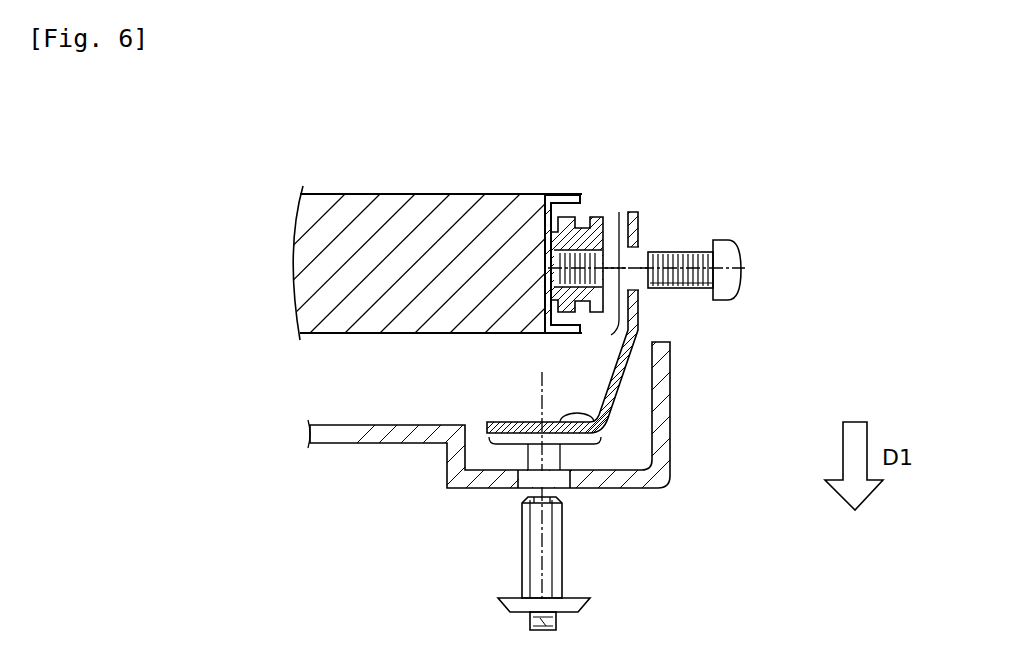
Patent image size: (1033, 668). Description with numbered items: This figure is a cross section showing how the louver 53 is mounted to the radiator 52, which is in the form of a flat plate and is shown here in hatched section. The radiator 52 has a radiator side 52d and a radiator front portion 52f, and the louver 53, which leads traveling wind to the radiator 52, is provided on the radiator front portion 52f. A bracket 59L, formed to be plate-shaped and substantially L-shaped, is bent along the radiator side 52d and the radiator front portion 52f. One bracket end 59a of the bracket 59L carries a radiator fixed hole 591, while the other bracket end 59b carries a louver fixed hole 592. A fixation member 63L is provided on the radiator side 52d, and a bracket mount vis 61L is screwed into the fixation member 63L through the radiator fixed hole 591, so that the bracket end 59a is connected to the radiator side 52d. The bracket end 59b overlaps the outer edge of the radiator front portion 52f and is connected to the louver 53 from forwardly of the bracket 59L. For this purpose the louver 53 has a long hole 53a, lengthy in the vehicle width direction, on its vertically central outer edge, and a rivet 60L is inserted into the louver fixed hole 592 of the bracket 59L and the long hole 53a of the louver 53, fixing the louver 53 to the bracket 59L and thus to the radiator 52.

The radiator 52 is at (484, 212).
The radiator side 52d is at (578, 195).
The radiator front portion 52f is at (325, 335).
The bracket end 59a is at (618, 243).
The radiator fixed hole 591 is at (642, 252).
The bracket mount vis 61L is at (742, 263).
The bracket 59L is at (641, 310).
The fixation member 63L is at (590, 313).
The louver 53 is at (672, 405).
The louver fixed hole 592 is at (612, 426).
The bracket end 59b is at (525, 504).
The long hole 53a is at (562, 498).
The rivet 60L is at (562, 565).